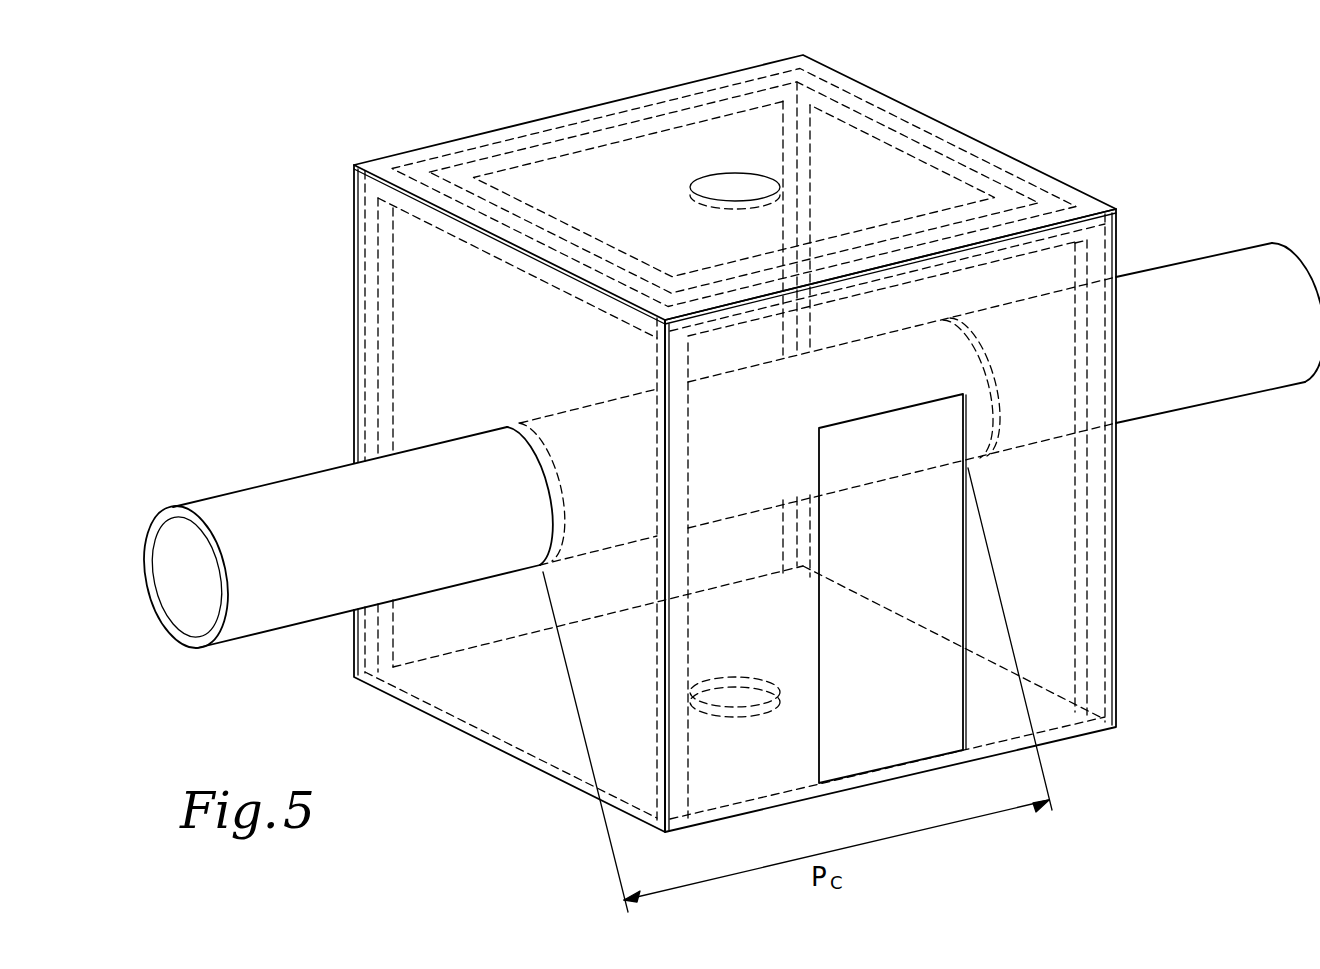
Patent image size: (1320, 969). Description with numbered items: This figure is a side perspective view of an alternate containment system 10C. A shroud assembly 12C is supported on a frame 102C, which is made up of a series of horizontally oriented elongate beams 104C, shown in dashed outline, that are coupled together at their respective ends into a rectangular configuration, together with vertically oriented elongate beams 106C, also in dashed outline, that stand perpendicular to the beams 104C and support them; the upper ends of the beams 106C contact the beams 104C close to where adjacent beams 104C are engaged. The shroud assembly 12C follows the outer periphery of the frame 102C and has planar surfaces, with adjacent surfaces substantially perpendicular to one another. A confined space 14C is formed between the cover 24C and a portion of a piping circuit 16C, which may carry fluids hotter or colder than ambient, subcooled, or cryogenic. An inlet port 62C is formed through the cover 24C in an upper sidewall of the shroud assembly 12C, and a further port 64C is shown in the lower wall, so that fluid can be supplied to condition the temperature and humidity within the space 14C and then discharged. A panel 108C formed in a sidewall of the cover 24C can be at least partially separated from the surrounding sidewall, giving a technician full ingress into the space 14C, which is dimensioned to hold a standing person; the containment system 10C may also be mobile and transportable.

The containment system 10C is at (240, 73).
The shroud assembly 12C is at (601, 103).
The confined space 14C is at (586, 366).
The piping circuit 16C is at (267, 485).
The cover 24C is at (345, 266).
The inlet port 62C is at (733, 184).
The bottom opening 64C is at (733, 705).
The frame 102C is at (620, 147).
The horizontally oriented elongate beams 104C is at (530, 163).
The vertically oriented elongate beams 106C is at (395, 338).
The panel 108C is at (835, 605).